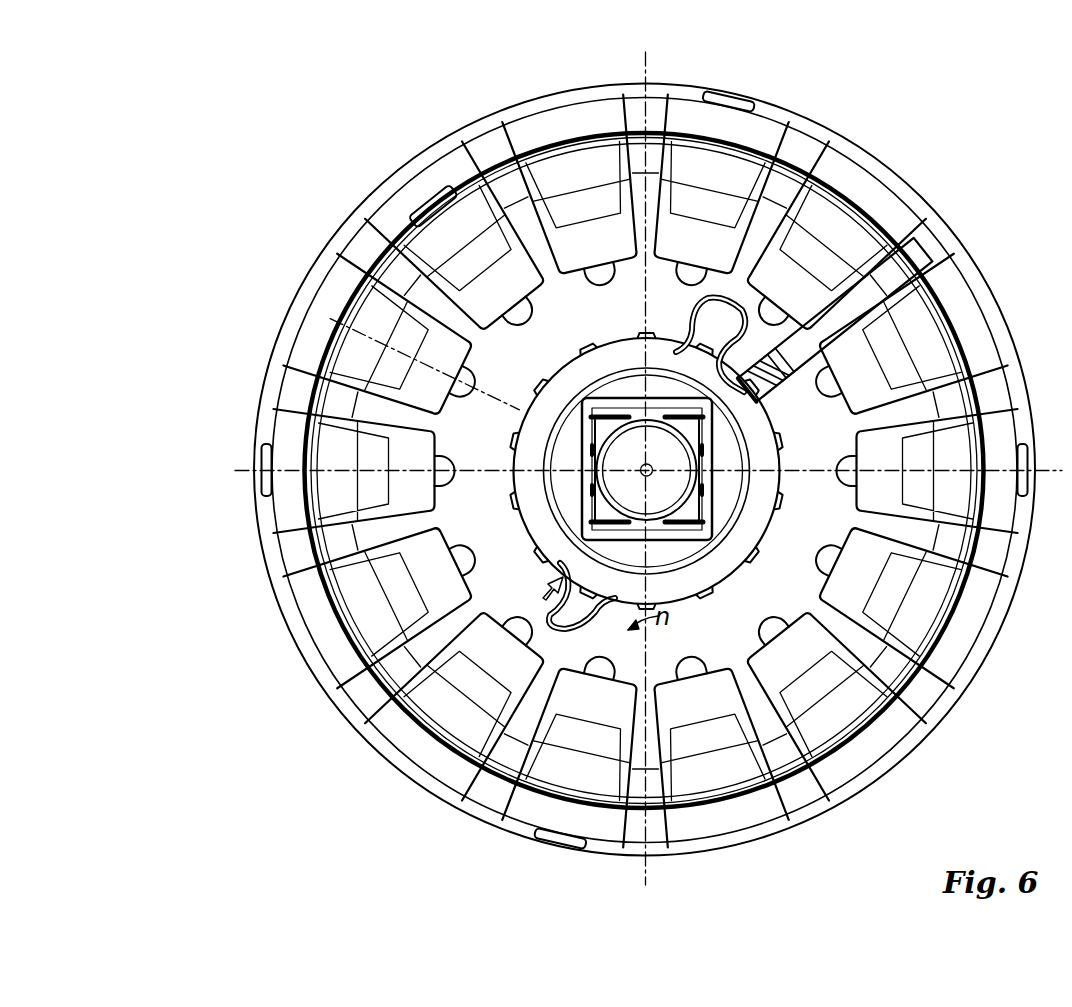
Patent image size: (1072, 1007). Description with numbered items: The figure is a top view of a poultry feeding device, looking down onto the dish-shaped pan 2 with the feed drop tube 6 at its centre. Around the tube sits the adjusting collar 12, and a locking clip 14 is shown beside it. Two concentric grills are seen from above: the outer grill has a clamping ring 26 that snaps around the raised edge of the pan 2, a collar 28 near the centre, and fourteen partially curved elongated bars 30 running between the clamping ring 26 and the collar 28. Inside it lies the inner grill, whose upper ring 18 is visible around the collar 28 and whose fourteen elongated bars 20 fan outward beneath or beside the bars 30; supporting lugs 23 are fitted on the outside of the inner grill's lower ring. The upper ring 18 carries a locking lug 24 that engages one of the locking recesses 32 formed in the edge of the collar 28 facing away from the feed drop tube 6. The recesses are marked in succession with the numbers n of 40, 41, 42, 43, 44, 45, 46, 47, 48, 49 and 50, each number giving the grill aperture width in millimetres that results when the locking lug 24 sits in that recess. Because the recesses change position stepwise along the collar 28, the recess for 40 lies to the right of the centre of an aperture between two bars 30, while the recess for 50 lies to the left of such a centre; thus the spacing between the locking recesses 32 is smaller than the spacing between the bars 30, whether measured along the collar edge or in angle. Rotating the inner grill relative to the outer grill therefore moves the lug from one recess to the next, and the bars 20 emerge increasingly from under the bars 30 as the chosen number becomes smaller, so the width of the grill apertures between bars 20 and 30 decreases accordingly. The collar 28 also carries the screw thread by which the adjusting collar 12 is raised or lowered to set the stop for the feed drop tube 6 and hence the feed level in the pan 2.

The pan 2 is at (375, 368).
The feed drop tube 6 is at (663, 398).
The adjusting collar 12 is at (612, 358).
The locking clip 14 is at (798, 352).
The upper ring 18 is at (590, 247).
The elongated bars 20 is at (880, 268).
The supporting lugs 23 is at (421, 213).
The locking lug 24 is at (603, 685).
The clamping ring 26 is at (975, 322).
The collar 28 is at (455, 432).
The elongated bars 30 is at (890, 272).
The locking recesses 32 is at (365, 322).
The number n (grill aperture width) 40 is at (470, 251).
The number n (grill aperture width) 41 is at (355, 349).
The number n (grill aperture width) 42 is at (327, 471).
The number n (grill aperture width) 43 is at (393, 593).
The number n (grill aperture width) 44 is at (470, 691).
The number n (grill aperture width) 45 is at (580, 738).
The number n (grill aperture width) 46 is at (708, 738).
The number n (grill aperture width) 47 is at (821, 691).
The number n (grill aperture width) 48 is at (896, 593).
The number n (grill aperture width) 49 is at (914, 471).
The number n (grill aperture width) 50 is at (896, 349).